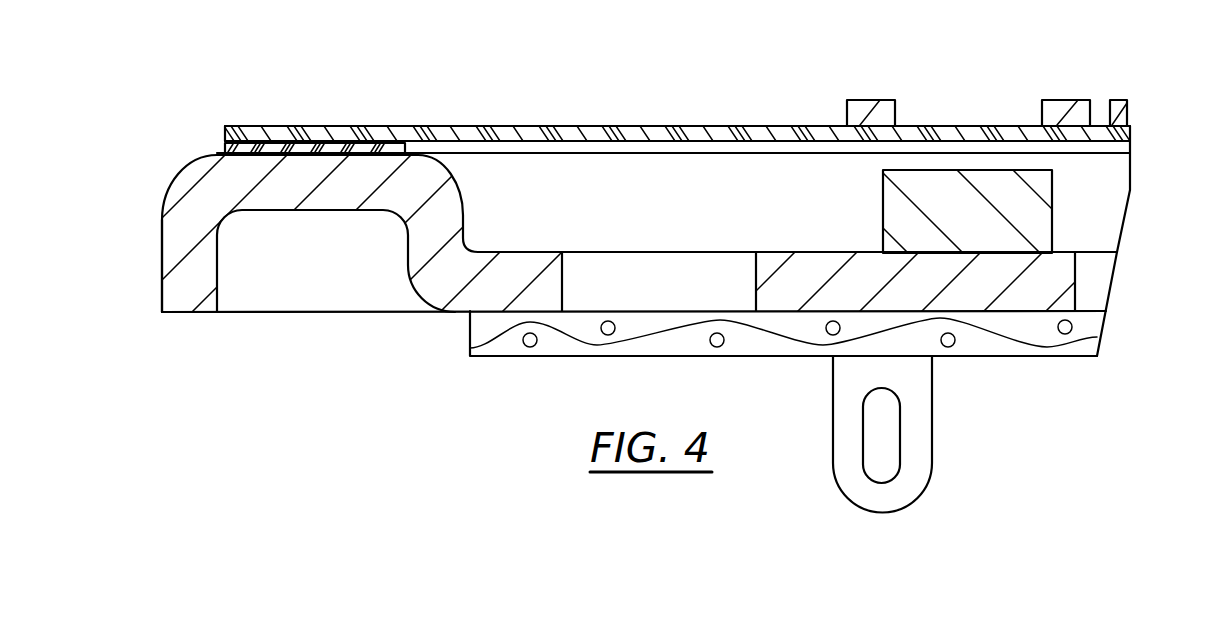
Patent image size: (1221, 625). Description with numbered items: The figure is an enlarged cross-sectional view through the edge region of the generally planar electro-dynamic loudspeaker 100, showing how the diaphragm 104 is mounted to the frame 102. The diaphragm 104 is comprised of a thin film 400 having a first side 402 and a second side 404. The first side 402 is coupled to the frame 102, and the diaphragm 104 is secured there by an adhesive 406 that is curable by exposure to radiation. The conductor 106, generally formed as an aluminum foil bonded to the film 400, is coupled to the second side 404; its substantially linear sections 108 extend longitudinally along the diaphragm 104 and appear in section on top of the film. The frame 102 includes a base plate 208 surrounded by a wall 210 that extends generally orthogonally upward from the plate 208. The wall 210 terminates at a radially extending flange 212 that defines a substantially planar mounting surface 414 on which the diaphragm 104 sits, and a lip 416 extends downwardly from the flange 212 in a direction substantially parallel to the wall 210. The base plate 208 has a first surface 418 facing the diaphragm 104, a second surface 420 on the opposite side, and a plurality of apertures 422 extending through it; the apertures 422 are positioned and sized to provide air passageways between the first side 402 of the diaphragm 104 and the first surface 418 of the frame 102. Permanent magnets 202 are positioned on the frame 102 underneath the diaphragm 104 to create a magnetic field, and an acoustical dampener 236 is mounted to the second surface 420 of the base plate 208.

The electro-dynamic loudspeaker 100 is at (431, 65).
The frame 102 is at (165, 133).
The diaphragm 104 is at (574, 114).
The conductor 106 is at (1101, 68).
The linear sections 108 is at (870, 100).
The permanent magnets 202 is at (883, 212).
The base plate 208 is at (538, 246).
The wall 210 is at (453, 178).
The flange 212 is at (263, 212).
The acoustical dampener 236 is at (1018, 364).
The thin film 400 is at (707, 135).
The first side 402 is at (630, 143).
The second side 404 is at (765, 135).
The adhesive 406 is at (224, 148).
The mounting surface 414 is at (296, 150).
The lip 416 is at (162, 237).
The first surface 418 is at (477, 248).
The second surface 420 is at (523, 313).
The apertures 422 is at (565, 282).